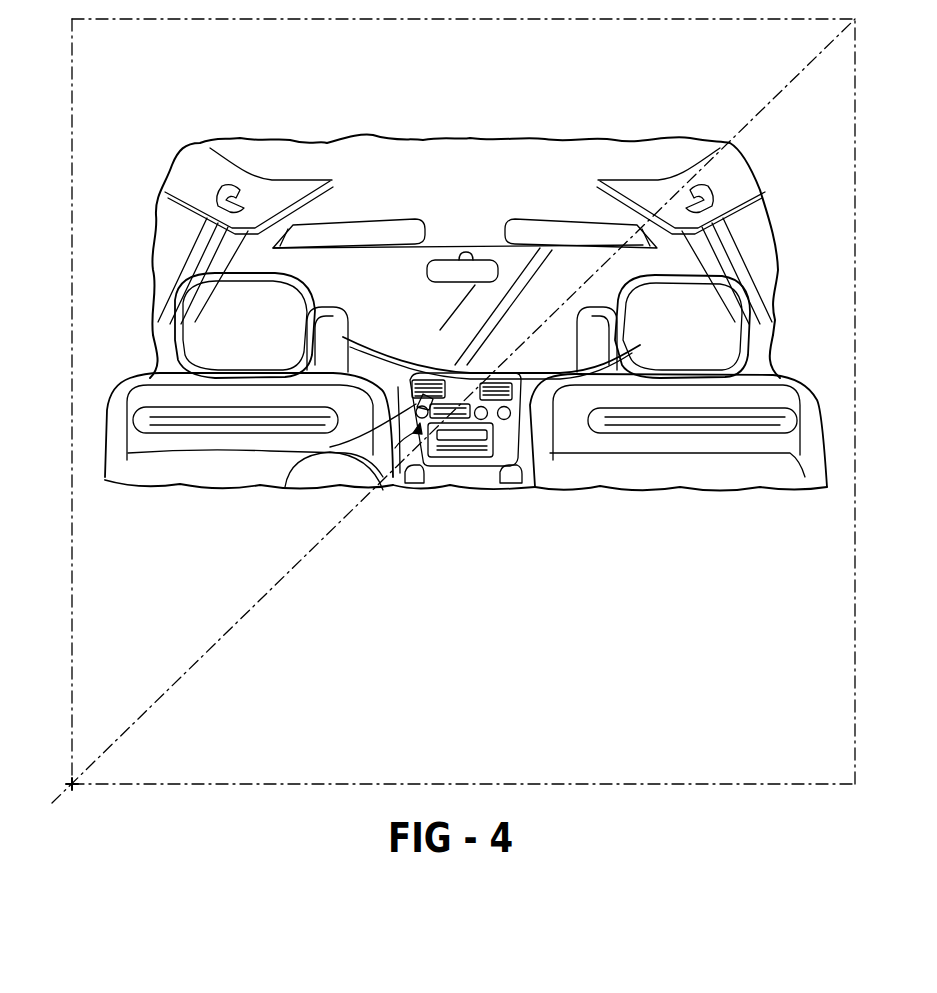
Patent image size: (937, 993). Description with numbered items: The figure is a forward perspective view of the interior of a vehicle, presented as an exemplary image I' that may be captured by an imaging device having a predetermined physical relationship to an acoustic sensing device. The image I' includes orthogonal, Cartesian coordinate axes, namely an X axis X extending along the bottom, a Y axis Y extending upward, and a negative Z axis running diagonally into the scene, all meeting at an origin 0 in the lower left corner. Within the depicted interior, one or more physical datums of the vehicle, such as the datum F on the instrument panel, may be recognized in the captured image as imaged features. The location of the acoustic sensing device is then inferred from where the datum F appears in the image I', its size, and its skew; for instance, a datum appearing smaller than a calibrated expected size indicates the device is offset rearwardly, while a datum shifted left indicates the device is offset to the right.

The image I' is at (465, 296).
The physical datum F is at (286, 487).
The Y axis Y is at (68, 722).
The X axis X is at (130, 790).
The origin 0 is at (65, 789).